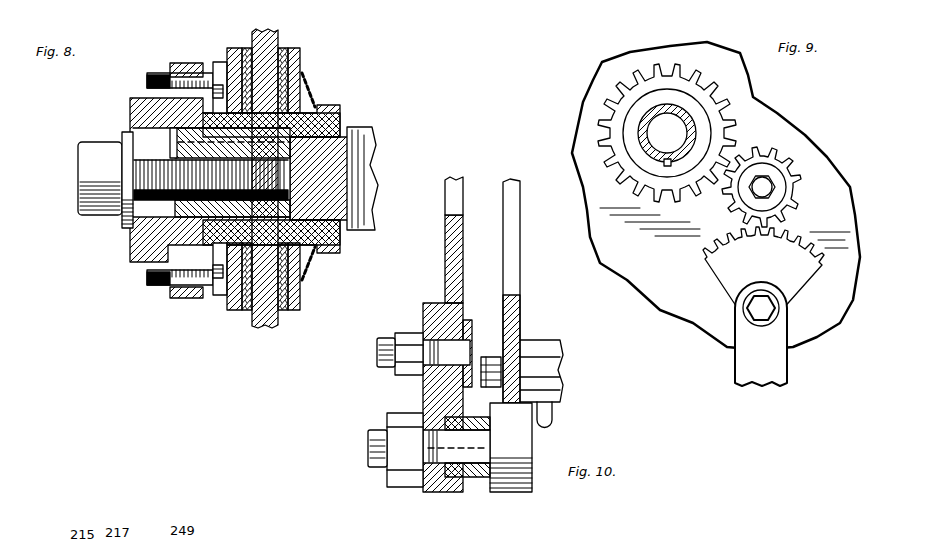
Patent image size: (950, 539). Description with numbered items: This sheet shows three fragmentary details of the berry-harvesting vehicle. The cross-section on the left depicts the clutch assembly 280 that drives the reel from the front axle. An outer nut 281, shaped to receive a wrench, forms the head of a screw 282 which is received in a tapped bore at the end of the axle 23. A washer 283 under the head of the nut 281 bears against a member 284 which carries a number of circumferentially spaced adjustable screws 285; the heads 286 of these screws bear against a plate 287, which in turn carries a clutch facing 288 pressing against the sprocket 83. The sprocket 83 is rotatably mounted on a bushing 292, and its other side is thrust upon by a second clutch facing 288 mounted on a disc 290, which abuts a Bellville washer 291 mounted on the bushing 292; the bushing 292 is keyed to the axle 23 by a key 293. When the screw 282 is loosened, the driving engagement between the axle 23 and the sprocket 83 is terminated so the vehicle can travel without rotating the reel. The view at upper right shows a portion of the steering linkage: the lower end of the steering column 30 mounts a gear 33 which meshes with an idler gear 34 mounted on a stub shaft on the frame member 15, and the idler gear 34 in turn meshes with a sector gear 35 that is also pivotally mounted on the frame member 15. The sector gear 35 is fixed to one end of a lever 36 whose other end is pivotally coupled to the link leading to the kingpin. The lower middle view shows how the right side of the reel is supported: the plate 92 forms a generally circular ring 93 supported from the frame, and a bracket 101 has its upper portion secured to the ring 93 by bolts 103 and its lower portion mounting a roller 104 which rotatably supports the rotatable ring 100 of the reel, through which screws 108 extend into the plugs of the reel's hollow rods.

In FIG. 8, the axle 23 is at (367, 132).
In FIG. 8, the sprocket 83 is at (258, 323).
In FIG. 8, the clutch assembly 280 is at (218, 193).
In FIG. 8, the outer nut 281 is at (83, 153).
In FIG. 8, the screw 282 is at (173, 132).
In FIG. 8, the washer 283 is at (123, 218).
In FIG. 8, the member 284 is at (145, 100).
In FIG. 8, the adjustable screws 285 is at (155, 73).
In FIG. 8, the heads 286 is at (222, 60).
In FIG. 8, the plate 287 is at (237, 312).
In FIG. 8, the clutch facing 288 is at (281, 50).
In FIG. 8, the disc 290 is at (297, 60).
In FIG. 8, the Bellville washer 291 is at (310, 88).
In FIG. 8, the bushing 292 is at (337, 110).
In FIG. 8, the key 293 is at (175, 125).
In FIG. 10, the plate 92 is at (455, 179).
In FIG. 10, the ring 93 is at (448, 258).
In FIG. 10, the rotatable ring 100 is at (515, 313).
In FIG. 10, the bracket 101 is at (438, 490).
In FIG. 10, the bolts 103 is at (375, 352).
In FIG. 10, the rollers 104 is at (515, 483).
In FIG. 10, the screws 108 is at (491, 357).
In FIG. 9, the frame member 15 is at (760, 120).
In FIG. 9, the steering column 30 is at (650, 140).
In FIG. 9, the gear 33 is at (617, 102).
In FIG. 9, the idler gear 34 is at (797, 177).
In FIG. 9, the sector gear 35 is at (720, 285).
In FIG. 9, the lever 36 is at (773, 370).